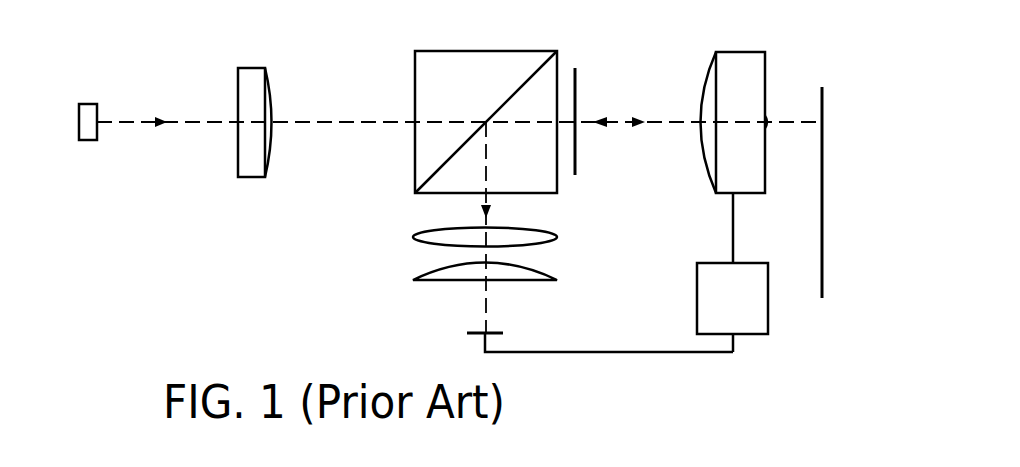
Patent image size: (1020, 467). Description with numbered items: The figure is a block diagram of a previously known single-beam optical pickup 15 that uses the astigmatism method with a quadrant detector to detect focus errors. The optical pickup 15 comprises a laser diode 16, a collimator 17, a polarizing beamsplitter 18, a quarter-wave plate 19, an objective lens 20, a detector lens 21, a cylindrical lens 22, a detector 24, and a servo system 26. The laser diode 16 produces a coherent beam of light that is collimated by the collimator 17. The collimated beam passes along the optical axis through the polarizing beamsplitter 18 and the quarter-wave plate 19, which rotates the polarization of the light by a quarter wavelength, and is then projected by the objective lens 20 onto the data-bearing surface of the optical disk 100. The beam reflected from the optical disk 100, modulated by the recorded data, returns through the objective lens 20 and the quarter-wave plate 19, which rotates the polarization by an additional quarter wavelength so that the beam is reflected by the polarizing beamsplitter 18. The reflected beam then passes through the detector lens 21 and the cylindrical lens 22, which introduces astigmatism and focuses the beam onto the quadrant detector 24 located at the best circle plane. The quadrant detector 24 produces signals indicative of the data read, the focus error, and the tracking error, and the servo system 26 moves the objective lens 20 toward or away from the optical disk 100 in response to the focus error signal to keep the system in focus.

The single-beam optical pickup 15 is at (160, 47).
The laser diode 16 is at (87, 142).
The collimator 17 is at (238, 178).
The polarizing beamsplitter 18 is at (440, 50).
The quarter-wave plate 19 is at (577, 83).
The objective lens 20 is at (735, 50).
The detector lens 21 is at (450, 238).
The cylindrical lens 22 is at (452, 280).
The quadrant detector 24 is at (467, 335).
The servo system 26 is at (752, 335).
The optical disk 100 is at (824, 98).